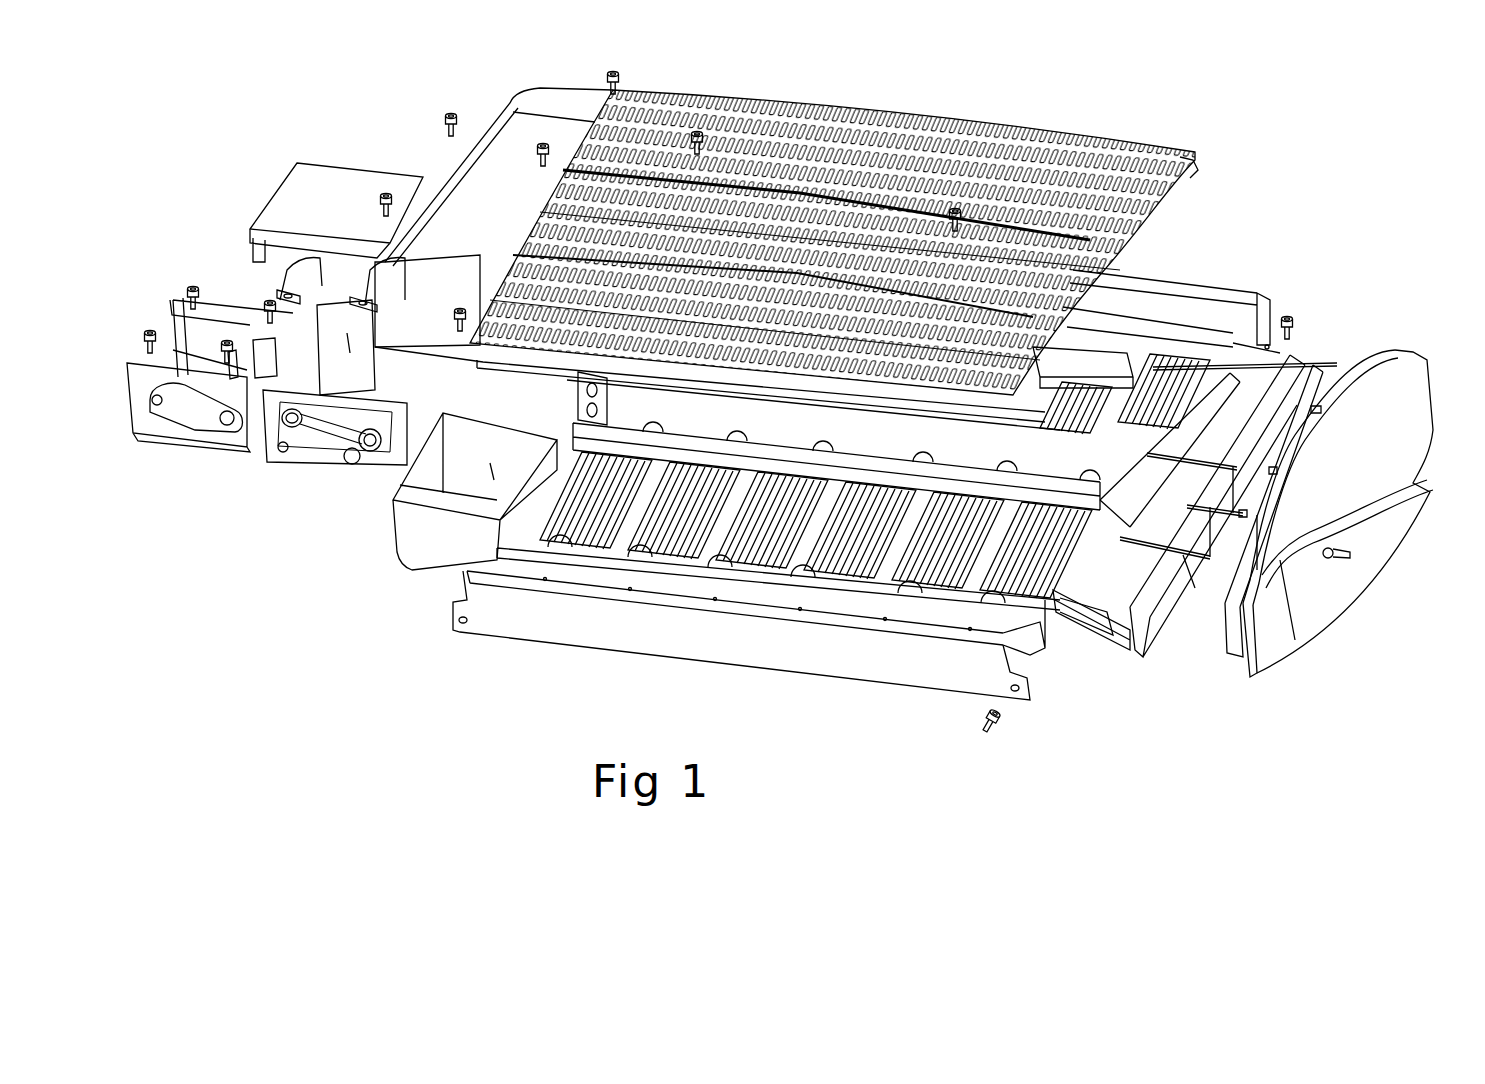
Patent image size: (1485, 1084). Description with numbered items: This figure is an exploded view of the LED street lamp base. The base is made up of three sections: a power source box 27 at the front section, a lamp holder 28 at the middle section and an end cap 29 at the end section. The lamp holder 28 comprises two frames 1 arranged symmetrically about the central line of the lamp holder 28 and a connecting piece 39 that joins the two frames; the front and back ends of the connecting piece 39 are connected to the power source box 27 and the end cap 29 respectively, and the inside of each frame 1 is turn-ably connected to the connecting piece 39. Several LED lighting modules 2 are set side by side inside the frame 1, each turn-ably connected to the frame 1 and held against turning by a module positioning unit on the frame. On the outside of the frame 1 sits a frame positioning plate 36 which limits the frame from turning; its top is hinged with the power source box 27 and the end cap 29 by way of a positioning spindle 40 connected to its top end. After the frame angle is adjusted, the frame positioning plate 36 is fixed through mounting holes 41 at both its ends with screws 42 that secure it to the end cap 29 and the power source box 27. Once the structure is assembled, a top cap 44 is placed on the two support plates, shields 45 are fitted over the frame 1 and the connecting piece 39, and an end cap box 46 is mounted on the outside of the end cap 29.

The frame 1 is at (1020, 632).
The LED lighting module 2 is at (1053, 597).
The power source box 27 is at (443, 540).
The lamp holder 28 is at (1152, 236).
The end cap 29 is at (1123, 477).
The frame positioning plate 36 is at (868, 650).
The connecting piece 39 is at (1147, 537).
The positioning spindle 40 is at (1107, 612).
The mounting holes 41 is at (462, 624).
The screws 42 is at (991, 726).
The top cap 44 is at (1080, 363).
The shields 45 is at (1130, 148).
The end cap box 46 is at (1307, 577).